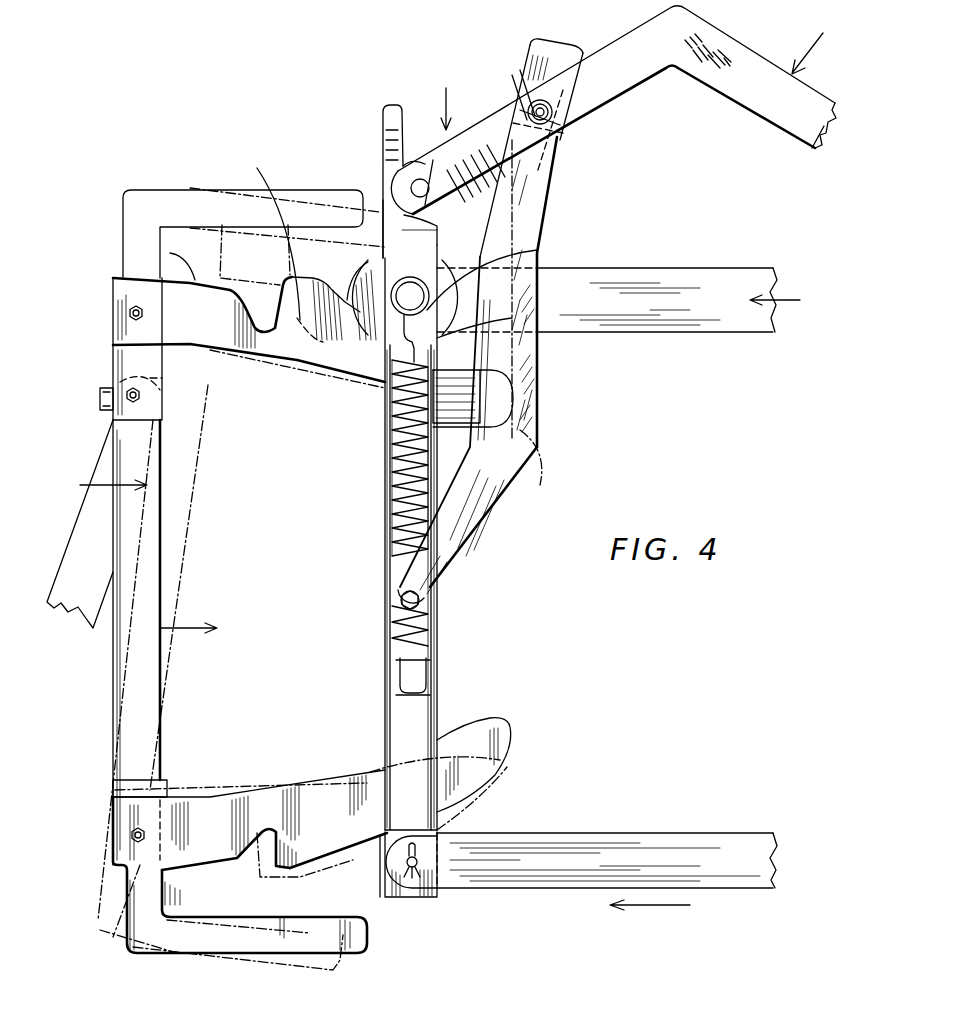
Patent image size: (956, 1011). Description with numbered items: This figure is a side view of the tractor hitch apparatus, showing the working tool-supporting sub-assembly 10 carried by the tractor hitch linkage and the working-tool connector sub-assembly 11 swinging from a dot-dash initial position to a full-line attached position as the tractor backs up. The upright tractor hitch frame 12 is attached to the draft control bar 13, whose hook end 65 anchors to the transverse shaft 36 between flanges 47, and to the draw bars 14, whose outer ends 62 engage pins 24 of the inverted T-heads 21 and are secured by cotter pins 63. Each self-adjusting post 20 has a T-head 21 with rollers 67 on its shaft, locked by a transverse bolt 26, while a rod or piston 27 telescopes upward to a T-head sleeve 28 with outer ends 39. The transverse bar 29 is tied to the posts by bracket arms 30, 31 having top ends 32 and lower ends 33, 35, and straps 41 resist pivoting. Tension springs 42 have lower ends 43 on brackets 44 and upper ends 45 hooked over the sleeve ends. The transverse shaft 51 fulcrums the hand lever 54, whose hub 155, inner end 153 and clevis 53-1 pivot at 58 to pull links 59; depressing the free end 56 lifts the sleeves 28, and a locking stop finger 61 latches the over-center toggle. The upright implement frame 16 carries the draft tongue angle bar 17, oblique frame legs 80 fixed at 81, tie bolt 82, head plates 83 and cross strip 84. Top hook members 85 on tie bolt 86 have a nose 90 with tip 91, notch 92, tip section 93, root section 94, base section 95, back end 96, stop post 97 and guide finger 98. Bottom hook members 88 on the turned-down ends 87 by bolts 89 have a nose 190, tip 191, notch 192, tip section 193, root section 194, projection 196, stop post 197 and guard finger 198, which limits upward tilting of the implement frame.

The working tool-supporting sub-assembly 10 is at (451, 95).
The working-tool connector sub-assembly 11 is at (156, 170).
The upright tractor hitch frame 12 is at (546, 200).
The draft control bar 13 is at (672, 271).
The draw bars 14 is at (596, 838).
The upright implement frame 16 is at (113, 652).
The draft tongue angle bar 17 is at (90, 532).
The self-adjusting posts 20 is at (449, 675).
The inverted T-head 21 is at (440, 897).
The transversely-extending pin 24 is at (398, 888).
The transverse bolt 26 is at (420, 601).
The rod or piston 27 is at (487, 366).
The T-head sleeve 28 is at (412, 296).
The transverse bar 29 is at (553, 130).
The bracket arms 30 is at (470, 470).
The bracket arms 31 is at (540, 380).
The top ends of bracket arms 32 is at (532, 68).
The lower ends of bracket arms 33 is at (390, 622).
The lower ends of bracket arms 35 is at (432, 586).
The transverse shaft 36 is at (324, 285).
The outer ends of T-head sleeves 39 is at (420, 328).
The straps 41 is at (470, 400).
The tension springs 42 is at (372, 632).
The lower ends of springs 43 is at (398, 676).
The brackets 44 is at (395, 692).
The upper ends of springs 45 is at (533, 254).
The transverse flanges 47 is at (357, 216).
The transverse shaft 51 is at (561, 114).
The clevises or forks 53-1 is at (434, 160).
The hand lever 54 is at (633, 80).
The free end of lever 56 is at (797, 142).
The pivot 58 is at (420, 178).
The pull links 59 is at (386, 212).
The locking stop finger 61 is at (386, 150).
The outer ends of draw bars 62 is at (425, 860).
The cotter pins 63 is at (385, 872).
The hook end of draft control bar 65 is at (364, 270).
The rollers 67 is at (428, 725).
The oblique frame legs 80 is at (133, 745).
The lower end fixing of frame legs 81 is at (165, 782).
The tie bolt 82 is at (128, 402).
The head plates 83 is at (125, 362).
The cross strip 84 is at (108, 404).
The top hook members 85 is at (347, 375).
The transverse tie bolt 86 is at (128, 316).
The turned-down ends of cross bar 87 is at (170, 796).
The bottom hook members 88 is at (229, 796).
The bolts 89 is at (135, 840).
The nose 90 is at (322, 352).
The tip 91 is at (541, 447).
The open-top notch 92 is at (265, 305).
The tip section 93 is at (460, 334).
The root section 94 is at (170, 253).
The anchoring base section 95 is at (130, 290).
The back end of tip section 96 is at (276, 234).
The upright stop post 97 is at (137, 218).
The guide and guard finger 98 is at (313, 186).
The inner end of hand lever 153 is at (479, 145).
The hub 155 is at (552, 104).
The nose of lower hook member 190 is at (340, 834).
The tip of lower hook 191 is at (512, 735).
The notch of lower hook 192 is at (262, 846).
The tip section of lower hook edge 193 is at (352, 848).
The root section of lower hook edge 194 is at (225, 856).
The projection 196 is at (278, 866).
The stop post of lower hook 197 is at (131, 893).
The guide and guard finger of lower hook 198 is at (216, 946).